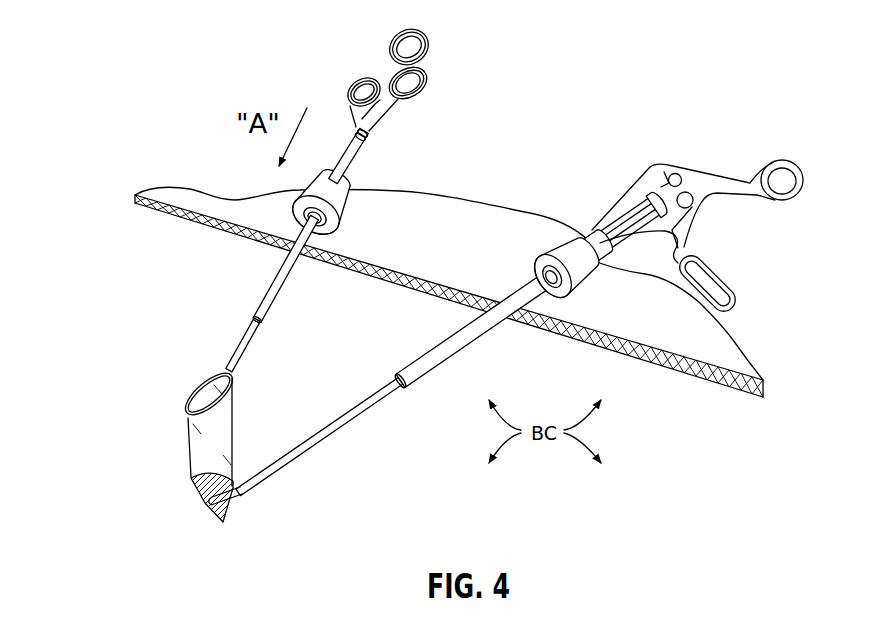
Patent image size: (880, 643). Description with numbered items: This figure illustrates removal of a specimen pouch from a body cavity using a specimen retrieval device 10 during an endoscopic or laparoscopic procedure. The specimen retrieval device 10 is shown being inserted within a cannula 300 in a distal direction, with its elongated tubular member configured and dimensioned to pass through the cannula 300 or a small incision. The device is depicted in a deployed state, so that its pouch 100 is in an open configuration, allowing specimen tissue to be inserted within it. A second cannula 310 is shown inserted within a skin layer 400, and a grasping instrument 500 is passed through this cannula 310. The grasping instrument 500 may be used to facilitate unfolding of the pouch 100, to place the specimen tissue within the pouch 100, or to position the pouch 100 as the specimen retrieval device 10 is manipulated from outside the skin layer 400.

The specimen retrieval device 10 is at (358, 52).
The pouch 100 is at (180, 428).
The cannula 300 is at (283, 278).
The cannula 310 is at (465, 330).
The skin layer 400 is at (187, 211).
The grasping instrument 500 is at (630, 170).